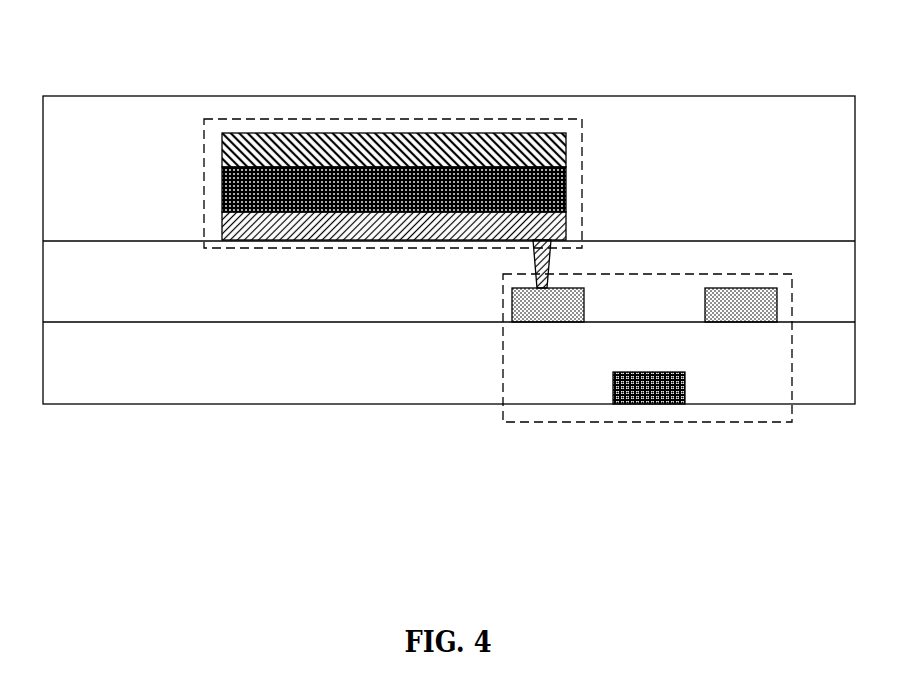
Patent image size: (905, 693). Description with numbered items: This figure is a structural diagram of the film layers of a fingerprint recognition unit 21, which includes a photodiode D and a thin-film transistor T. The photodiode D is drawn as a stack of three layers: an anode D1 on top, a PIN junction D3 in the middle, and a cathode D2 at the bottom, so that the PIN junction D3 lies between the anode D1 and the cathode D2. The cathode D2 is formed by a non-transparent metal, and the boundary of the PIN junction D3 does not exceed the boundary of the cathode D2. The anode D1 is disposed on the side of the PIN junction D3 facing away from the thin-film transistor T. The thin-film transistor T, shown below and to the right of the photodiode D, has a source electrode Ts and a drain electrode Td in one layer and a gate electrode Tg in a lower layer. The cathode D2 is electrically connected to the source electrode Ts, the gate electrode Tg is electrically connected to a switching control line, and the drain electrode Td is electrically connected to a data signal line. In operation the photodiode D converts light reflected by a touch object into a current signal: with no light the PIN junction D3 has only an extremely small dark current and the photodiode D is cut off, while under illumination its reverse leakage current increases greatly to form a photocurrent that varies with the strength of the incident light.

The fingerprint recognition unit 21 is at (758, 73).
The photodiode D is at (393, 152).
The anode D1 is at (413, 135).
The PIN junction D3 is at (466, 175).
The cathode D2 is at (533, 222).
The thin-film transistor T is at (647, 281).
The source electrode Ts is at (545, 312).
The gate electrode Tg is at (653, 405).
The drain electrode Td is at (742, 307).